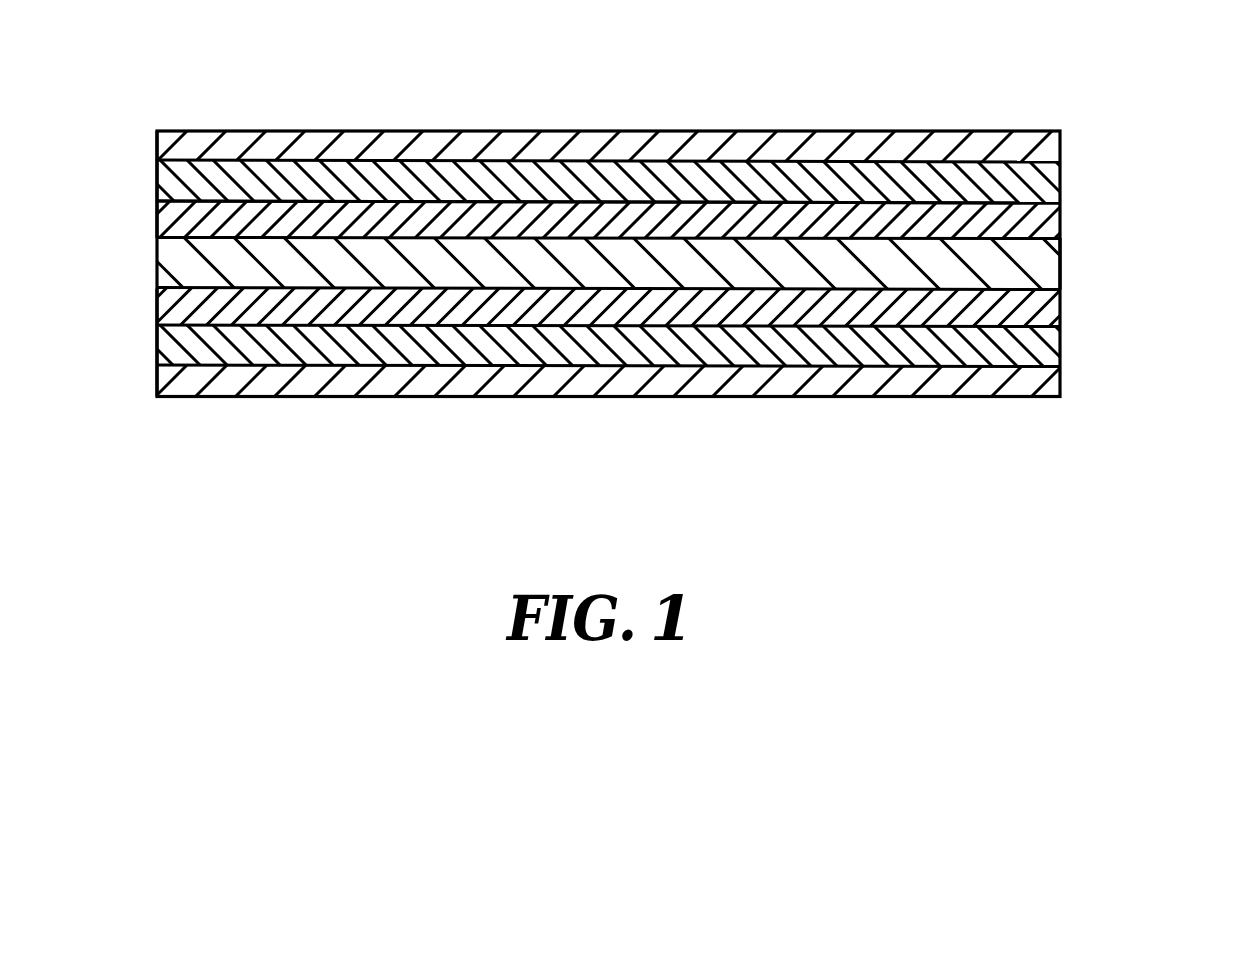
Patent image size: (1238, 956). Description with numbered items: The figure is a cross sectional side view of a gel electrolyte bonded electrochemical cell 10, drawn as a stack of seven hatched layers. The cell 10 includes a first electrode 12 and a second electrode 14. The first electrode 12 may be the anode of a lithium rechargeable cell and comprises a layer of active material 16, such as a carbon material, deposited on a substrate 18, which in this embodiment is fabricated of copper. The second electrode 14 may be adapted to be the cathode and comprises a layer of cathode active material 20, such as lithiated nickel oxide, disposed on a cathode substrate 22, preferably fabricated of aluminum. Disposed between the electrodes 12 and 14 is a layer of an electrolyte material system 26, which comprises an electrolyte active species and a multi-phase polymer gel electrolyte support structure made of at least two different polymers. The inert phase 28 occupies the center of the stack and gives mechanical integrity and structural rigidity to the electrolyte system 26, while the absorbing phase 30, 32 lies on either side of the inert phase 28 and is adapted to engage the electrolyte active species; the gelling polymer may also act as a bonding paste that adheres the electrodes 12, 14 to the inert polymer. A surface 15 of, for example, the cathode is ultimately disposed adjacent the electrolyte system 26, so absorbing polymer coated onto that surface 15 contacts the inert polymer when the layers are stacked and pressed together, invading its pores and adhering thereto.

The cell 10 is at (253, 485).
The first electrode 12 is at (137, 363).
The second electrode 14 is at (142, 158).
The surface 15 is at (280, 197).
The layer of active material 16 is at (1070, 350).
The substrate 18 is at (697, 382).
The cathode active material 20 is at (1063, 183).
The cathode substrate 22 is at (1003, 132).
The electrolyte material system 26 is at (1092, 245).
The inert phase 28 is at (155, 260).
The absorbing phase 30 is at (150, 217).
The absorbing phase 32 is at (1068, 309).